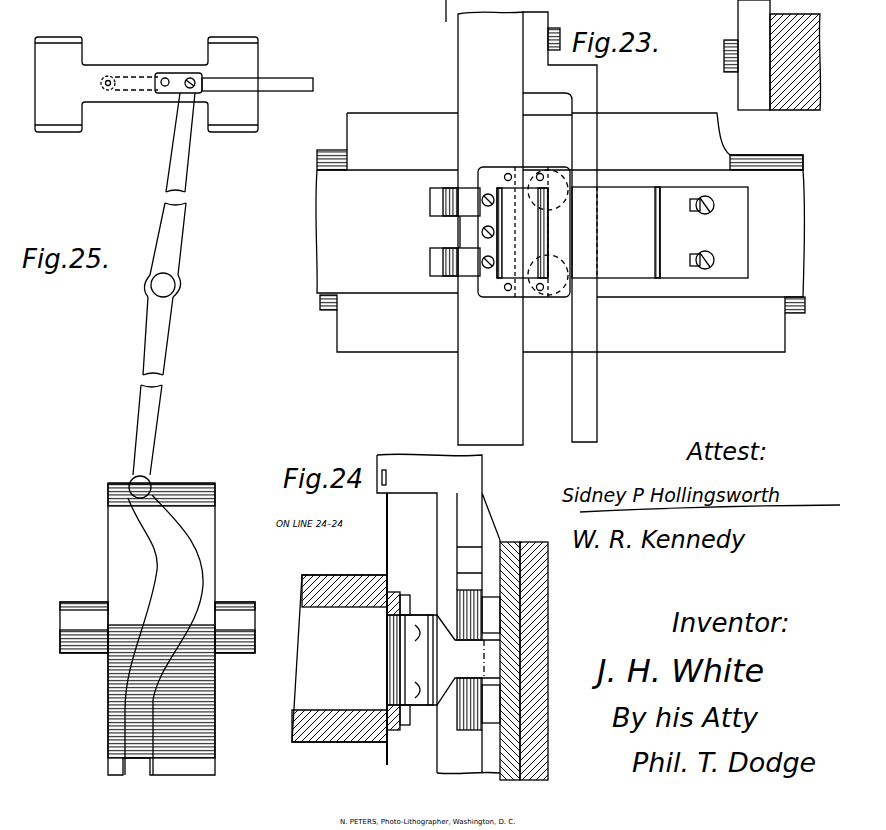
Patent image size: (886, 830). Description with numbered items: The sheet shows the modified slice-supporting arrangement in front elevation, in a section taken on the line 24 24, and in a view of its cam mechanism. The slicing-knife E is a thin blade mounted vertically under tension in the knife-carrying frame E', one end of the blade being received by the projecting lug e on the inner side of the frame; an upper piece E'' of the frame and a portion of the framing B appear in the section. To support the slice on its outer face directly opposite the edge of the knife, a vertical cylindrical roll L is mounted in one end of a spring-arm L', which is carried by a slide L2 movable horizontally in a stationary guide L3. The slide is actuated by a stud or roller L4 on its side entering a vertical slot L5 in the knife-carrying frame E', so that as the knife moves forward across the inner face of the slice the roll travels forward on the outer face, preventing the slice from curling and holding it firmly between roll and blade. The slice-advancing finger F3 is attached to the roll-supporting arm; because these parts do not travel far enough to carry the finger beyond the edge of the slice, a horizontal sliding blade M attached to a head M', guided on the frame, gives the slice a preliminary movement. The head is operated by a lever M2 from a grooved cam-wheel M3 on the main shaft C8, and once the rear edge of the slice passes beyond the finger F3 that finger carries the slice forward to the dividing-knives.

In FIG. 23, the section line 24 24 is at (436, 11).
In FIG. 23, the knife-carrying frame E' is at (490, 228).
In FIG. 24, the head piece of bar E E'' is at (438, 613).
In FIG. 24, the slicing-knife E is at (394, 629).
In FIG. 24, the projecting lug e is at (394, 476).
In FIG. 23, the vertical cylindrical roll L is at (524, 232).
In FIG. 24, the vertical cylindrical roll L is at (379, 661).
In FIG. 23, the spring-arm L' is at (622, 232).
In FIG. 24, the spring-arm L' is at (416, 660).
In FIG. 23, the slide L2 is at (560, 241).
In FIG. 24, the slide L2 is at (562, 655).
In FIG. 23, the stationary guide L3 is at (560, 232).
In FIG. 24, the stationary guide L3 is at (548, 580).
In FIG. 23, the stud or roller L4 is at (548, 166).
In FIG. 24, the stud or roller L4 is at (478, 660).
In FIG. 23, the vertical slot L5 is at (560, 227).
In FIG. 23, the slice-advancing finger F3 is at (436, 246).
In FIG. 24, the frame B is at (339, 658).
In FIG. 25, the horizontal sliding blade M is at (234, 91).
In FIG. 25, the head M' is at (146, 84).
In FIG. 25, the lever M2 is at (170, 295).
In FIG. 25, the grooved cam-wheel M3 is at (161, 629).
In FIG. 25, the shaft C8 is at (157, 627).